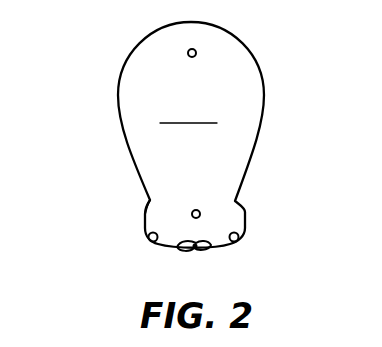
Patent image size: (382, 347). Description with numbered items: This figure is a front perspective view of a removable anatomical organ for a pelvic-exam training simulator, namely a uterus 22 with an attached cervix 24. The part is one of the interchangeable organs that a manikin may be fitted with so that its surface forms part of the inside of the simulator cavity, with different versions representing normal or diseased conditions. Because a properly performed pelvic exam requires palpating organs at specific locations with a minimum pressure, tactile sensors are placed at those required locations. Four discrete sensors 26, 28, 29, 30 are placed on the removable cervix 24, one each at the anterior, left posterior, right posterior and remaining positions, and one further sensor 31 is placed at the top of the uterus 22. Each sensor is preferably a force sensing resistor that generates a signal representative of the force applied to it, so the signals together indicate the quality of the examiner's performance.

The uterus 22 is at (118, 74).
The cervix 24 is at (152, 202).
The sensor 26 is at (247, 242).
The sensor 28 is at (149, 238).
The sensor 29 is at (188, 251).
The sensor 30 is at (198, 211).
The sensor 31 is at (195, 56).